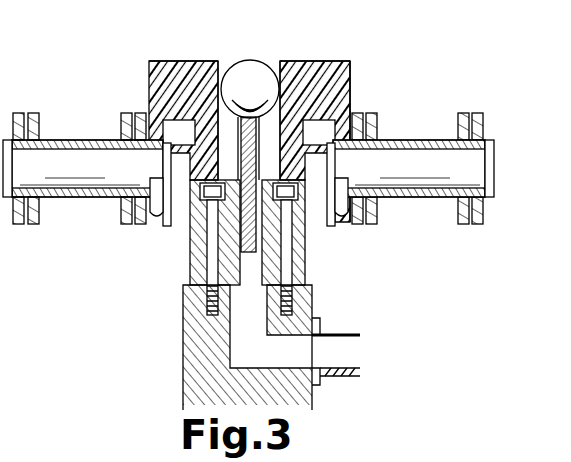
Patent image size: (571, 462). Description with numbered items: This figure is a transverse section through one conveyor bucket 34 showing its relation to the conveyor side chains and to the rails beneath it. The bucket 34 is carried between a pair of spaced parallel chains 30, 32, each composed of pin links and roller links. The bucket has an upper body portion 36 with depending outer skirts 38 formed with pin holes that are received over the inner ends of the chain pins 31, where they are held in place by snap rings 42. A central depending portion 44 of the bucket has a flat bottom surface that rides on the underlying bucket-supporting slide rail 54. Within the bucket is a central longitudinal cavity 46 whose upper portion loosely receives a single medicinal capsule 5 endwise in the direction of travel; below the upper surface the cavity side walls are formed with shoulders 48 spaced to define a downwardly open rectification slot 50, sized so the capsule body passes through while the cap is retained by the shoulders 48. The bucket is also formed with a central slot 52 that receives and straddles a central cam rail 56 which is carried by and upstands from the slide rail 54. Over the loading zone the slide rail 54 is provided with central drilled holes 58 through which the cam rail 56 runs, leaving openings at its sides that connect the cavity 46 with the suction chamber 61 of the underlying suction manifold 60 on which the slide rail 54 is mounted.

The medicinal capsule 5 is at (251, 55).
The conveyor chain 30 is at (82, 198).
The chain pins 31 is at (78, 162).
The conveyor chain 32 is at (420, 200).
The conveyor bucket 34 is at (354, 59).
The upper body portion 36 is at (353, 90).
The outer skirts 38 is at (157, 220).
The snap rings 42 is at (167, 200).
The central depending portion 44 is at (190, 158).
The central longitudinal cavity 46 is at (221, 60).
The shoulders 48 is at (195, 62).
The rectification slot 50 is at (222, 100).
The central slot 52 is at (298, 154).
The slide rail 54 is at (305, 268).
The cam rail 56 is at (248, 236).
The drilled holes 58 is at (257, 286).
The suction manifold 60 is at (255, 378).
The suction chamber 61 is at (264, 359).